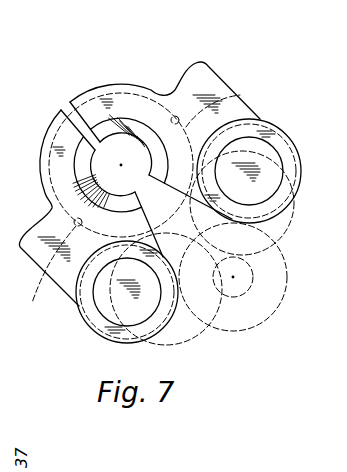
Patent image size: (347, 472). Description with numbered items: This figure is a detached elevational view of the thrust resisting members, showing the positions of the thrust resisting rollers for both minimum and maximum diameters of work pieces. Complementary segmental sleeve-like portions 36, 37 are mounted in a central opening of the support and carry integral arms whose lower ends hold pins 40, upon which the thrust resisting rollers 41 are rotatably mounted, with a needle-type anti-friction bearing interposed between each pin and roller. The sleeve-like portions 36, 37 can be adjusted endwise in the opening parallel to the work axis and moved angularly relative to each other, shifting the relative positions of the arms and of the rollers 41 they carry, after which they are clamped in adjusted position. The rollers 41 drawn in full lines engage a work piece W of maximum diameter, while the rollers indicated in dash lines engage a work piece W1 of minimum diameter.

The segmental sleeve-like portion 36 is at (45, 297).
The segmental sleeve-like portion 37 is at (238, 98).
The pin 40 is at (273, 157).
The thrust resisting roller 41 is at (247, 128).
The work piece W is at (226, 332).
The work piece W1 is at (253, 283).